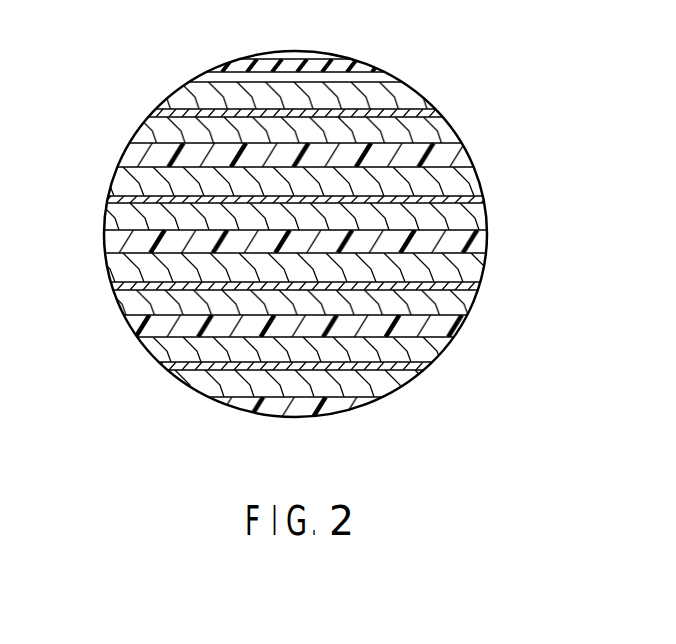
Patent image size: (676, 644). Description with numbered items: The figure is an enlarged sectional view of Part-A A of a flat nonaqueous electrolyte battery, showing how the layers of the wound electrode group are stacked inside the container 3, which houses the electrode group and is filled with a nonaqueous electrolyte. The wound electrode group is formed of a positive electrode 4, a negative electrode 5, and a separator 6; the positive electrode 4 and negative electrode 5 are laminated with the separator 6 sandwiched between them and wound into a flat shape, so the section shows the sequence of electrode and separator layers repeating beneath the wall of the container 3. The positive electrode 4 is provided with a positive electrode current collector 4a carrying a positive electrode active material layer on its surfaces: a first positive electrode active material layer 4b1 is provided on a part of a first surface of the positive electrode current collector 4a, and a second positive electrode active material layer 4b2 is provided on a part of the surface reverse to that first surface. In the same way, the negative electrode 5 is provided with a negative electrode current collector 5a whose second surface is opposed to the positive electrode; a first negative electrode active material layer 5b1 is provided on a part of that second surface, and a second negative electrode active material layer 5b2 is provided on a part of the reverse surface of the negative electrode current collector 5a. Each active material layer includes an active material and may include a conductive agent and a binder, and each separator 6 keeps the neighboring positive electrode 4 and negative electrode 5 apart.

The Part- A is at (270, 55).
The container 3 is at (367, 64).
The positive electrode 4 is at (336, 297).
The positive electrode current collector 4a is at (457, 203).
The first positive electrode active material layer 4b1 is at (452, 187).
The second positive electrode active material layer 4b2 is at (322, 324).
The negative electrode 5 is at (336, 196).
The negative electrode current collector 5a is at (425, 113).
The first negative electrode active material layer 5b1 is at (407, 100).
The second negative electrode active material layer 5b2 is at (322, 222).
The separator 6 is at (143, 155).